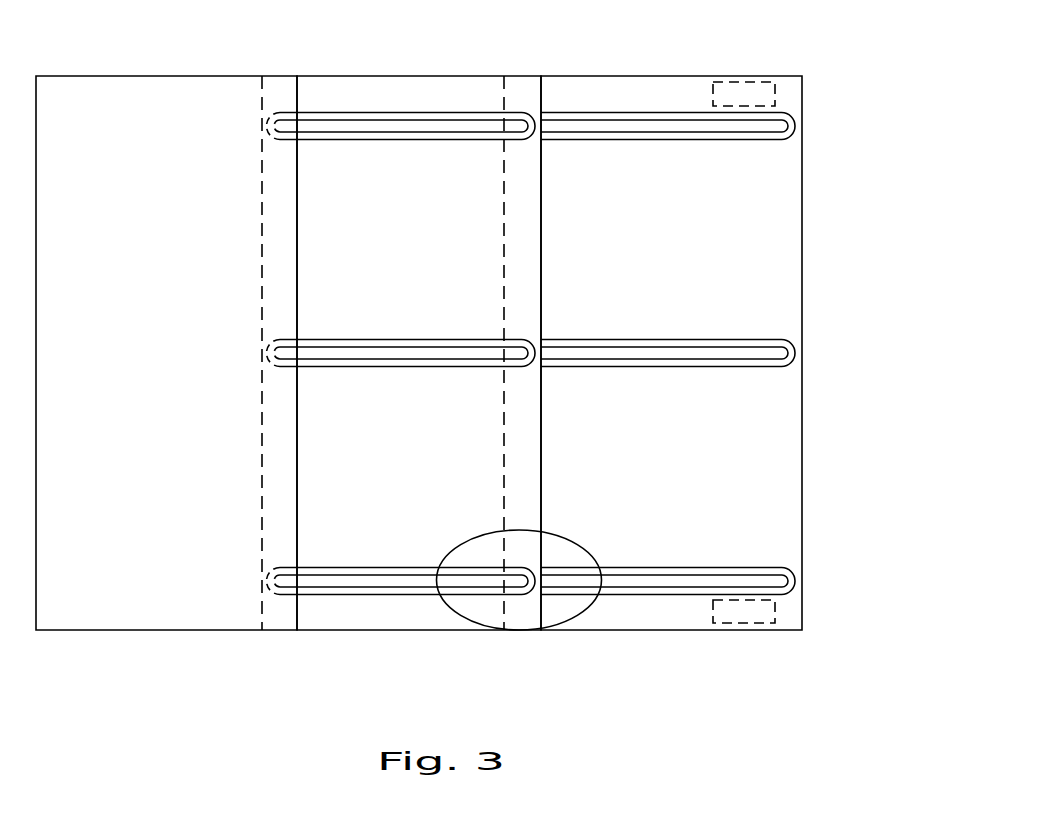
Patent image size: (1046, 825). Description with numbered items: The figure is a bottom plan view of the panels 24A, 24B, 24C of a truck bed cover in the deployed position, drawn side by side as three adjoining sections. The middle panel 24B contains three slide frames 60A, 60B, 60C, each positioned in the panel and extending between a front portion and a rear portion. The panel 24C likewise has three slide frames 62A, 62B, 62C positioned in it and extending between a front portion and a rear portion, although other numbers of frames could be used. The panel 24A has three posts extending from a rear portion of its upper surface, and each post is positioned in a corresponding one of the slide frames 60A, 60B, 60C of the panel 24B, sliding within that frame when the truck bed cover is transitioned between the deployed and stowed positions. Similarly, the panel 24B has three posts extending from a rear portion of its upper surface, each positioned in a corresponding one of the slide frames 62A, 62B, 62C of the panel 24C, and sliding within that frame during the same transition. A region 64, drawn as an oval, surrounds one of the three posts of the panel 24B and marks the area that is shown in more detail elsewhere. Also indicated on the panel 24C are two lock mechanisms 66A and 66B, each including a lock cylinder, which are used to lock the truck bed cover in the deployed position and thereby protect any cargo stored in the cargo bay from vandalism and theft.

The panel 24A is at (180, 236).
The panel 24B is at (383, 236).
The panel 24C is at (641, 236).
The slide frame 60A is at (347, 141).
The slide frame 60B is at (410, 339).
The slide frame 60C is at (352, 567).
The slide frame 62A is at (650, 140).
The slide frame 62B is at (665, 339).
The slide frame 62C is at (718, 567).
The region 64 is at (553, 536).
The lock mechanism 66A is at (737, 82).
The lock mechanism 66B is at (742, 623).